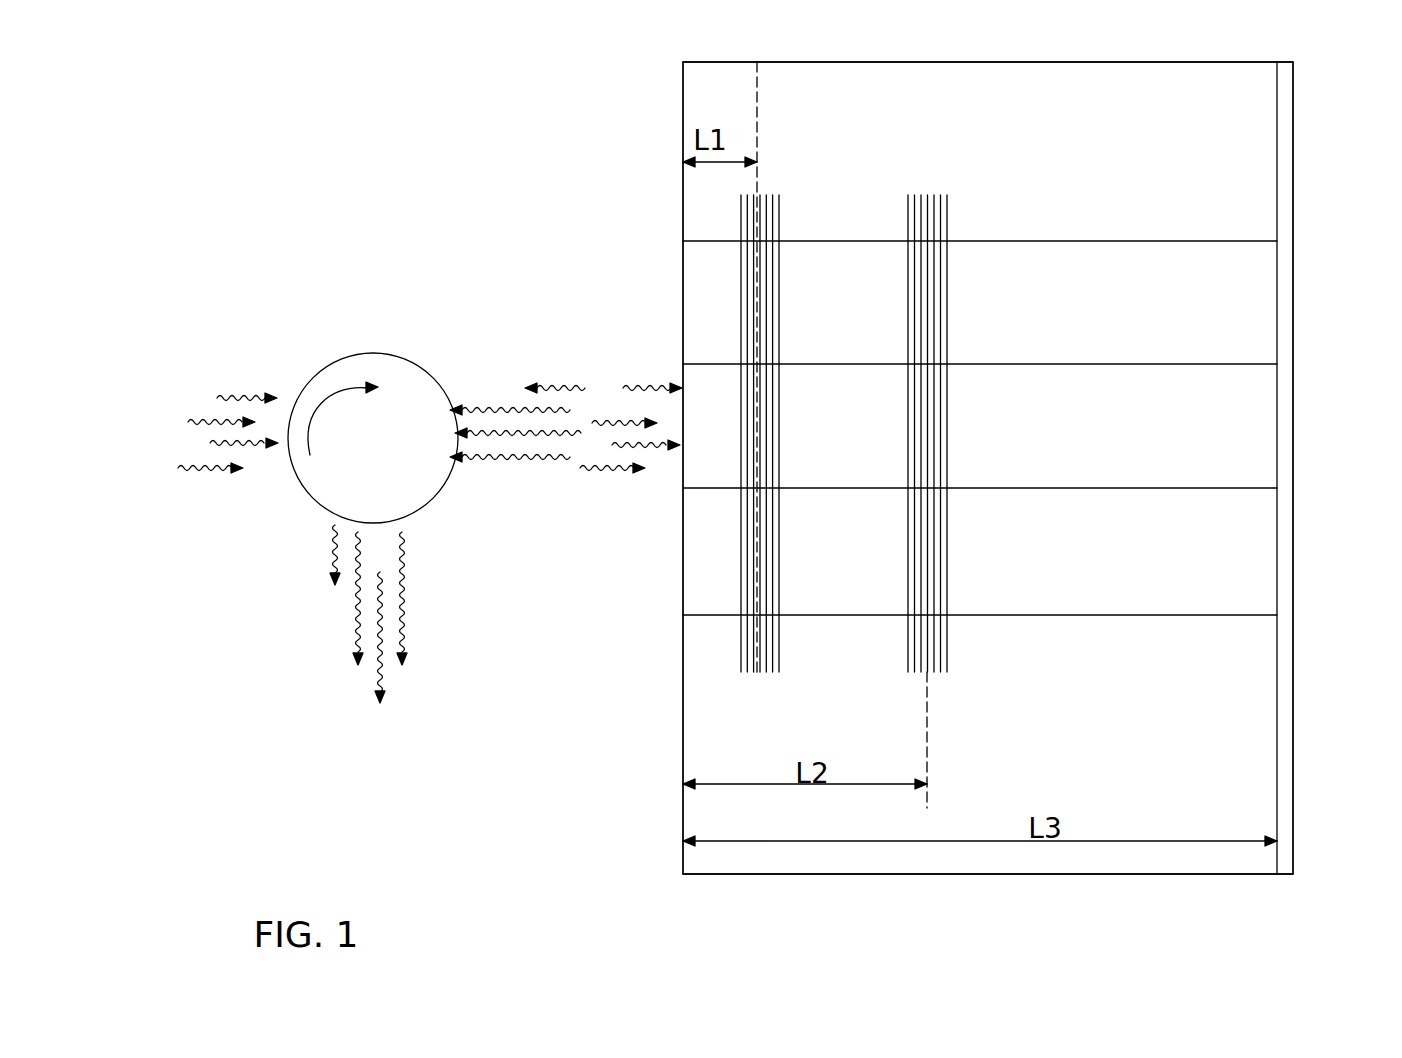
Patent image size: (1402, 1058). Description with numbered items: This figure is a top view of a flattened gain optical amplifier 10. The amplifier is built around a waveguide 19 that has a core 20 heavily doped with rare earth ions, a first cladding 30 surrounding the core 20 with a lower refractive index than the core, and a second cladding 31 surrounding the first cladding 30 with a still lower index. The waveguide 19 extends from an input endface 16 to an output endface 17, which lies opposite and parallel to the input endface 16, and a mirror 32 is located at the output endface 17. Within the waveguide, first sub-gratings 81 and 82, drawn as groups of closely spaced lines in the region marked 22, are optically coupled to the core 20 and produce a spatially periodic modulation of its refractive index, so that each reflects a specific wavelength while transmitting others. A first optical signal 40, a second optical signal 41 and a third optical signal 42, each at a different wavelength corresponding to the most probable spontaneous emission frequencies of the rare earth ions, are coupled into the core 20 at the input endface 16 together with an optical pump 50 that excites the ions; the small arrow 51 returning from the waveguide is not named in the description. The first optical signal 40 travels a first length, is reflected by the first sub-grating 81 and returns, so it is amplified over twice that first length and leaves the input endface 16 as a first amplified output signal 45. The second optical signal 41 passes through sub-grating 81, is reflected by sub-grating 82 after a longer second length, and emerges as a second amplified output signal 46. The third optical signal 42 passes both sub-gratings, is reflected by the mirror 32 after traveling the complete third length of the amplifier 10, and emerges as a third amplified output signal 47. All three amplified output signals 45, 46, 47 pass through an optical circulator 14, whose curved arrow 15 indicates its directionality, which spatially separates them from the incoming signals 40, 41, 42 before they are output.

The flattened gain optical amplifier 10 is at (715, 898).
The optical circulator 14 is at (400, 373).
The curved arrow 15 is at (333, 398).
The input endface 16 is at (682, 378).
The output endface 17 is at (1275, 420).
The waveguide 19 is at (1072, 228).
The core 20 is at (1228, 432).
The grating region 22 is at (870, 440).
The first cladding 30 is at (1240, 308).
The second cladding 31 is at (1240, 197).
The mirror 32 is at (1284, 762).
The first optical signal 40 is at (263, 445).
The second optical signal 41 is at (208, 418).
The third optical signal 42 is at (208, 472).
The first amplified output signal 45 is at (513, 465).
The second amplified output signal 46 is at (548, 443).
The third amplified output signal 47 is at (495, 407).
The optical pump 50 is at (238, 395).
The reflected light 51 is at (573, 385).
The first sub-grating 81 is at (760, 672).
The first sub-grating 82 is at (940, 672).